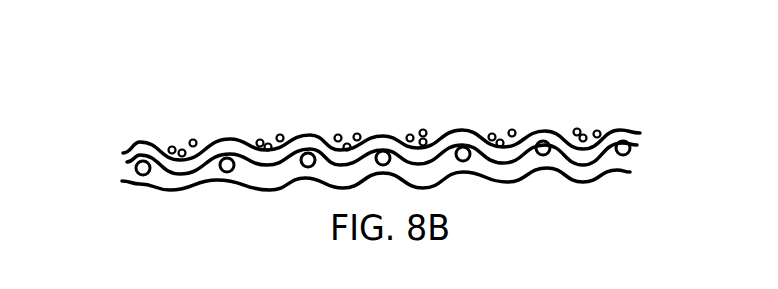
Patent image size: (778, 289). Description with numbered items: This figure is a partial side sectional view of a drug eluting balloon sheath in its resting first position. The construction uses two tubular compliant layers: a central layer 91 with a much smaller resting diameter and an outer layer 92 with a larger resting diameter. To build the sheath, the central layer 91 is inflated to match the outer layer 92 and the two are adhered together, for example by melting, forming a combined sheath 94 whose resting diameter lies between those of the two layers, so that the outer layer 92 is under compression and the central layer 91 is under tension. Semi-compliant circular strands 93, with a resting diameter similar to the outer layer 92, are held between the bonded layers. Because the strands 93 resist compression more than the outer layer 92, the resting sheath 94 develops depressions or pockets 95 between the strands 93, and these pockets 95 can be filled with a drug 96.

The central layer 91 is at (162, 183).
The outer layer 92 is at (132, 153).
The strands 93 is at (309, 154).
The combined sheath 94 is at (200, 112).
The pockets 95 is at (357, 118).
The drug 96 is at (599, 130).